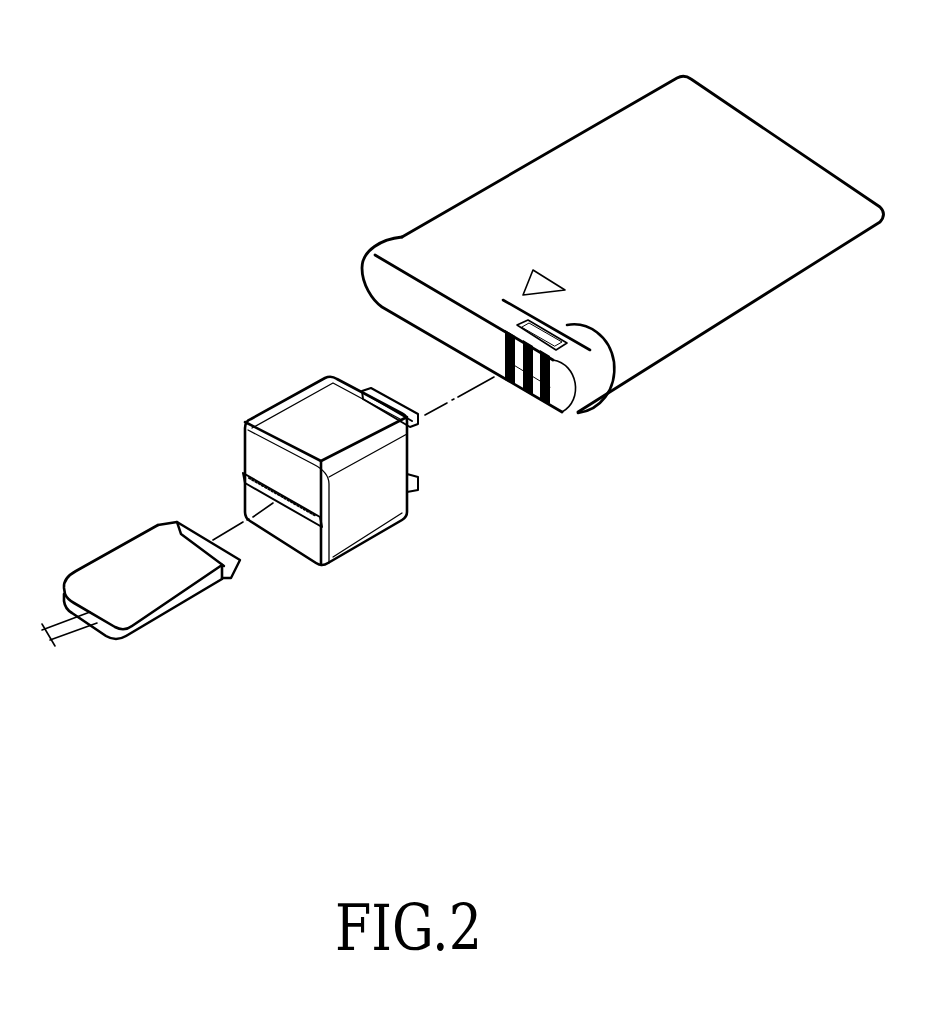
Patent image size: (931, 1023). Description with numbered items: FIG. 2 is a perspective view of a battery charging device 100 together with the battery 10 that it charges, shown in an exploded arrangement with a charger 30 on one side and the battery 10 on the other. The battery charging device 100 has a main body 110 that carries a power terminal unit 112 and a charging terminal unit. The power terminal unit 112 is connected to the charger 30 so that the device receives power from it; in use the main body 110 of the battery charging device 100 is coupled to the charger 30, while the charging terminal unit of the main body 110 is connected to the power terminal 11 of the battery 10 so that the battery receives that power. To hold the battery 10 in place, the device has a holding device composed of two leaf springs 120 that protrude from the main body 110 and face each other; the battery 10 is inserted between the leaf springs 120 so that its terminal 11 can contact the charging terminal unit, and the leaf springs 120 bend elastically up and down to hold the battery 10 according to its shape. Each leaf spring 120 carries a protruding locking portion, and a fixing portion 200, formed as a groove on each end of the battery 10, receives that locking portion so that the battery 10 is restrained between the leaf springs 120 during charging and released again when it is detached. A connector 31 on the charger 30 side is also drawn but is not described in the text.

The battery 10 is at (605, 163).
The power terminal 11 is at (548, 337).
The fixing portion 200 is at (572, 325).
The battery charging device 100 is at (236, 426).
The main body 110 is at (297, 422).
The power terminal unit 112 is at (303, 508).
The leaf springs 120 is at (366, 392).
The charger 30 is at (102, 573).
The connector plug tip 31 is at (183, 533).